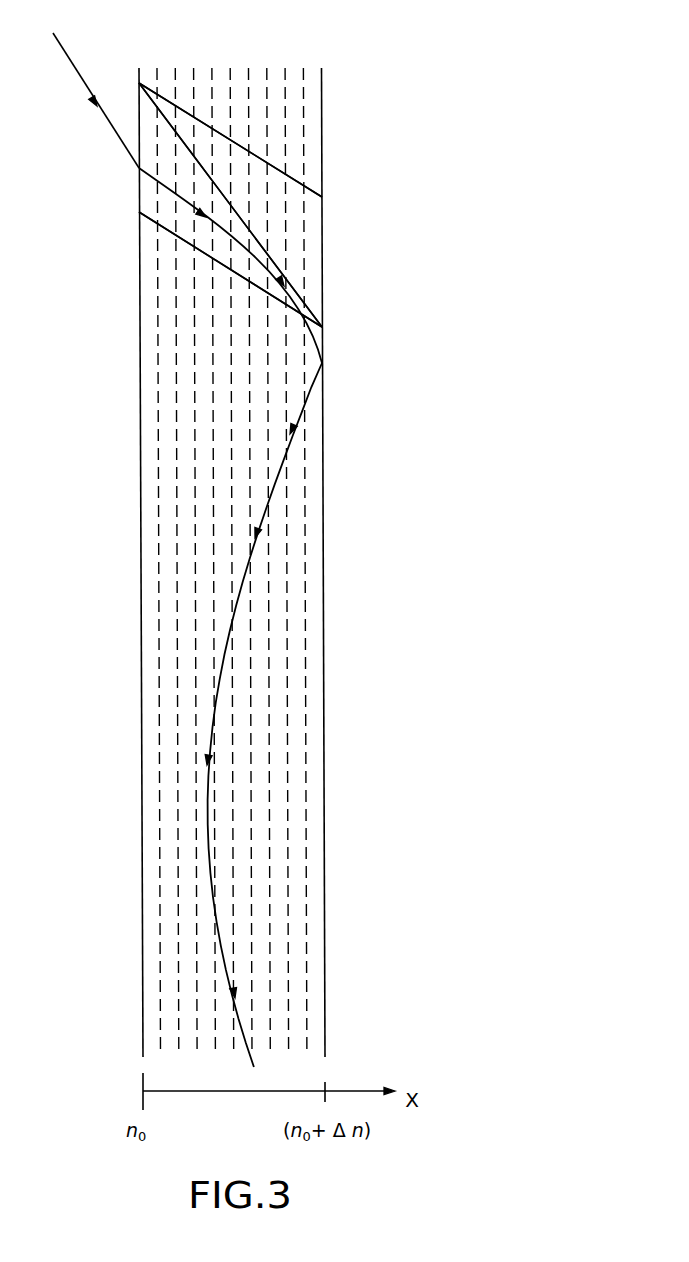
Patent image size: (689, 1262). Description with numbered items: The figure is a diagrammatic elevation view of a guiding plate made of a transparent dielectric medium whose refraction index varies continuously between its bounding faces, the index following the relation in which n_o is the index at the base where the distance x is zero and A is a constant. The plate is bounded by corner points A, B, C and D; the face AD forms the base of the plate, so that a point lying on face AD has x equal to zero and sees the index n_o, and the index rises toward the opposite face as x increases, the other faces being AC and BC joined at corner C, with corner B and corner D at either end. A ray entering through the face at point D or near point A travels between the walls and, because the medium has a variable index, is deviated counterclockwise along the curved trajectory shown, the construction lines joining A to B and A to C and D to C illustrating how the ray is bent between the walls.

The corner point A of the plate A is at (217, 196).
The corner point B of the plate B is at (242, 146).
The corner point C of the plate C is at (242, 213).
The corner point D of the plate D is at (218, 263).